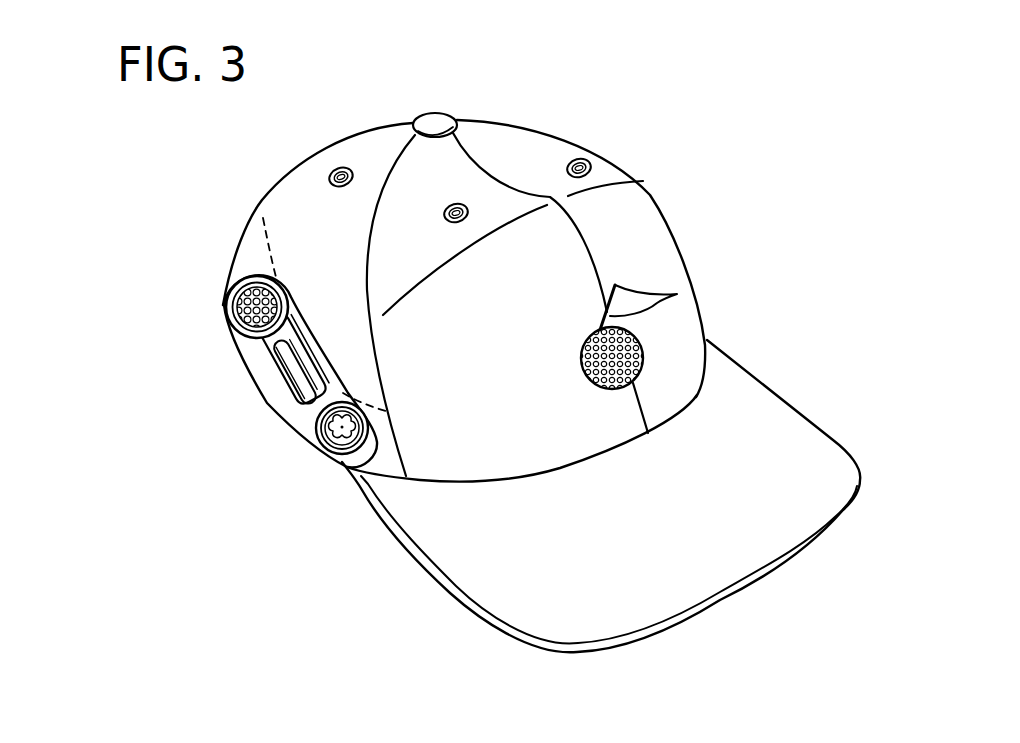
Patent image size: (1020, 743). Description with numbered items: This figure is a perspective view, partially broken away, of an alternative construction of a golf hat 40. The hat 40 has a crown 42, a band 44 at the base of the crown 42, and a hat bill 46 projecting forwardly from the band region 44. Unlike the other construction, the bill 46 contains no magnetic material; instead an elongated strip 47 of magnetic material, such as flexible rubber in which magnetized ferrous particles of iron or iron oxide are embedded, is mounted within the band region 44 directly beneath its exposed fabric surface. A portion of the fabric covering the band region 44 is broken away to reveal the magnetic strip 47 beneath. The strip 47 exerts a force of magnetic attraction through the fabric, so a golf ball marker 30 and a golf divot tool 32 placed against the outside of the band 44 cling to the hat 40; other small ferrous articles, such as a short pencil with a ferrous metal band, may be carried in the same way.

The golf ball marker 30 is at (333, 442).
The golf divot tool 32 is at (266, 363).
The golf hat 40 is at (708, 211).
The crown 42 is at (553, 147).
The band 44 is at (248, 252).
The hat bill 46 is at (787, 372).
The strip of magnetic material 47 is at (287, 410).